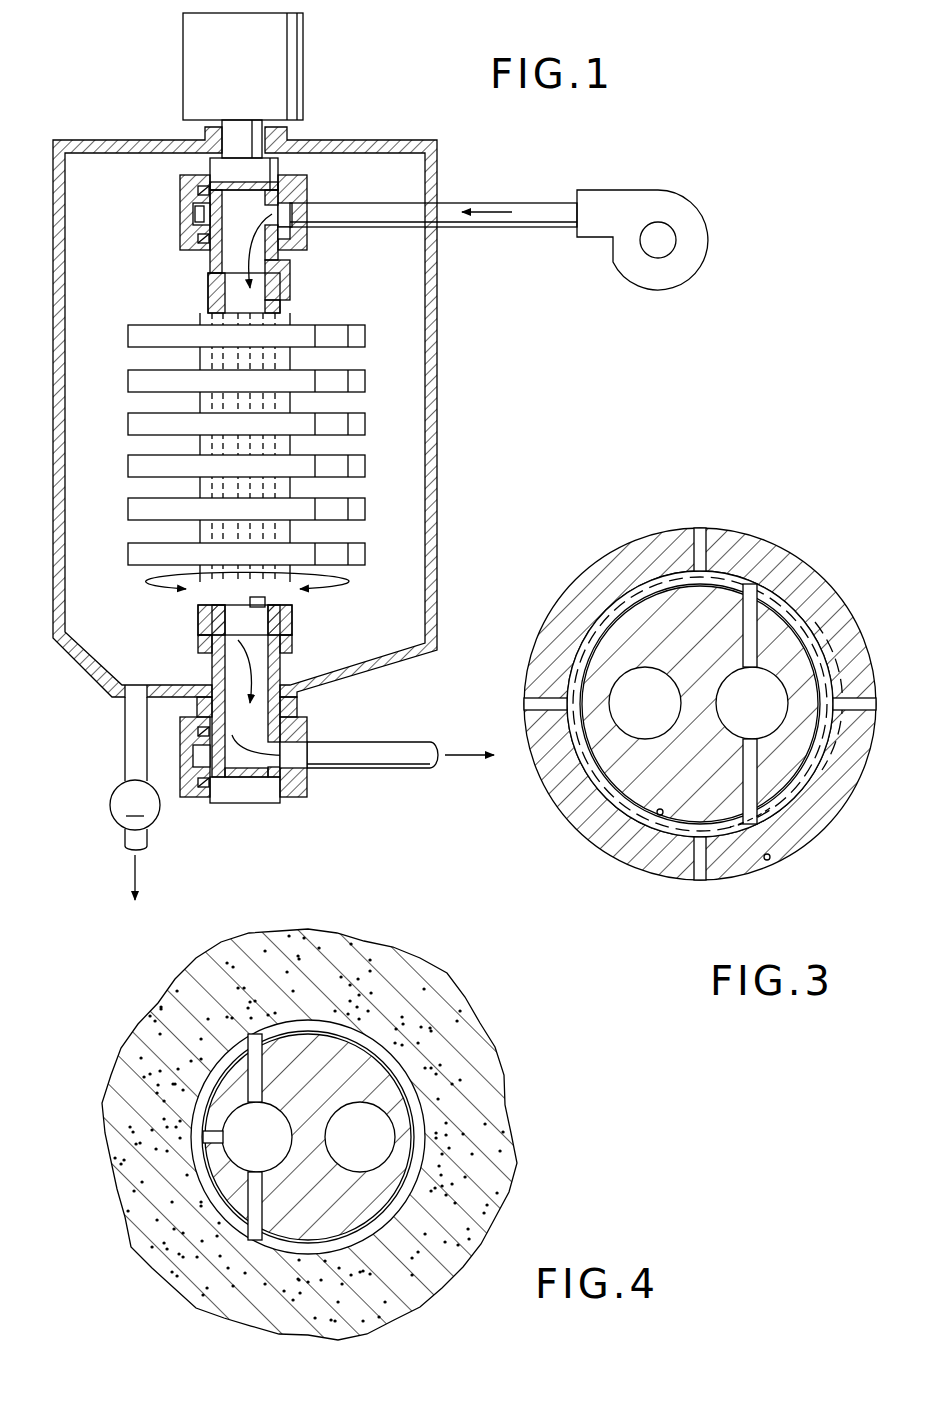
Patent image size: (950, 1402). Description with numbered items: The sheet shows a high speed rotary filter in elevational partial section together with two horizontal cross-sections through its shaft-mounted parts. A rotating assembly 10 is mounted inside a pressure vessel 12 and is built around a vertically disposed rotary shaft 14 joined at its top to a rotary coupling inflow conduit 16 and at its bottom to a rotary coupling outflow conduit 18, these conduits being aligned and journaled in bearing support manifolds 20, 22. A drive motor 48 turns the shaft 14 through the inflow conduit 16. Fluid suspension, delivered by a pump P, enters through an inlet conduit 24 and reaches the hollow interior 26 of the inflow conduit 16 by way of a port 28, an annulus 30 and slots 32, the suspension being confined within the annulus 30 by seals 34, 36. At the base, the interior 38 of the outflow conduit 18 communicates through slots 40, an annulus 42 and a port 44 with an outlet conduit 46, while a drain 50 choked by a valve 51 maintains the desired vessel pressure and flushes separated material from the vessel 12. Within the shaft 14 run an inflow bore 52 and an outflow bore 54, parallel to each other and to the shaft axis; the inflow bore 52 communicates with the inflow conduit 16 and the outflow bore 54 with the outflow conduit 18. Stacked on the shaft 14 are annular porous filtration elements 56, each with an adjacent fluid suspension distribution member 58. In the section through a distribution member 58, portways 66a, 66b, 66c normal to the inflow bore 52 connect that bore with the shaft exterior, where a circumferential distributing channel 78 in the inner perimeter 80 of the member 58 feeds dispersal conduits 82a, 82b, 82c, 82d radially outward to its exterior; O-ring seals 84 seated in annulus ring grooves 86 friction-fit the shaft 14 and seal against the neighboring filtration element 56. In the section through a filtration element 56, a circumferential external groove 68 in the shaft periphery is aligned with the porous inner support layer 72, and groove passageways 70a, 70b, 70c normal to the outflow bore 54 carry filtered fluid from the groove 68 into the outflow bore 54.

In FIG. 1, the rotating assembly 10 is at (120, 363).
In FIG. 1, the pressure vessel 12 is at (147, 138).
In FIG. 1, the rotary shaft 14 is at (206, 292).
In FIG. 3, the rotary shaft 14 is at (683, 605).
In FIG. 4, the rotary shaft 14 is at (360, 1083).
In FIG. 1, the rotary coupling inflow conduit 16 is at (292, 272).
In FIG. 1, the rotary coupling outflow conduit 18 is at (296, 620).
In FIG. 1, the bearing support manifold 20 is at (295, 183).
In FIG. 1, the bearing support manifold 22 is at (307, 718).
In FIG. 1, the inlet conduit 24 is at (478, 205).
In FIG. 1, the hollow interior 26 is at (236, 256).
In FIG. 1, the port 28 is at (305, 215).
In FIG. 1, the annulus 30 is at (195, 213).
In FIG. 1, the slots 32 is at (276, 232).
In FIG. 1, the seal 34 is at (200, 190).
In FIG. 1, the seal 36 is at (200, 240).
In FIG. 1, the interior 38 is at (240, 665).
In FIG. 1, the slots 40 is at (276, 800).
In FIG. 1, the annulus 42 is at (307, 797).
In FIG. 1, the port 44 is at (300, 752).
In FIG. 1, the outlet conduit 46 is at (400, 760).
In FIG. 1, the drive motor 48 is at (272, 67).
In FIG. 1, the drain 50 is at (130, 748).
In FIG. 1, the choke valve 51 is at (113, 820).
In FIG. 1, the inflow bore 52 is at (290, 302).
In FIG. 3, the inflow bore 52 is at (752, 703).
In FIG. 4, the inflow bore 52 is at (360, 1137).
In FIG. 1, the outflow bore 54 is at (232, 610).
In FIG. 3, the outflow bore 54 is at (645, 703).
In FIG. 4, the outflow bore 54 is at (257, 1137).
In FIG. 1, the annular porous filtration element 56 is at (152, 383).
In FIG. 3, the fluid suspension distribution member 58 is at (594, 582).
In FIG. 3, the portway 66a is at (758, 612).
In FIG. 3, the portway 66b is at (833, 676).
In FIG. 3, the portway 66c is at (756, 762).
In FIG. 4, the circumferential external groove 68 is at (341, 1030).
In FIG. 4, the groove passageway 70a is at (246, 1062).
In FIG. 4, the groove passageway 70b is at (207, 1138).
In FIG. 4, the groove passageway 70c is at (256, 1195).
In FIG. 4, the porous inner support layer 72 is at (437, 1000).
In FIG. 3, the circumferential distributing channel 78 is at (630, 803).
In FIG. 3, the inner perimeter 80 is at (652, 810).
In FIG. 3, the dispersal conduit 82a is at (700, 537).
In FIG. 3, the dispersal conduit 82b is at (880, 708).
In FIG. 3, the dispersal conduit 82c is at (700, 868).
In FIG. 3, the dispersal conduit 82d is at (540, 705).
In FIG. 3, the O-ring seal 84 is at (800, 848).
In FIG. 3, the annulus ring groove 86 is at (660, 816).
In FIG. 1, the pump P is at (655, 205).